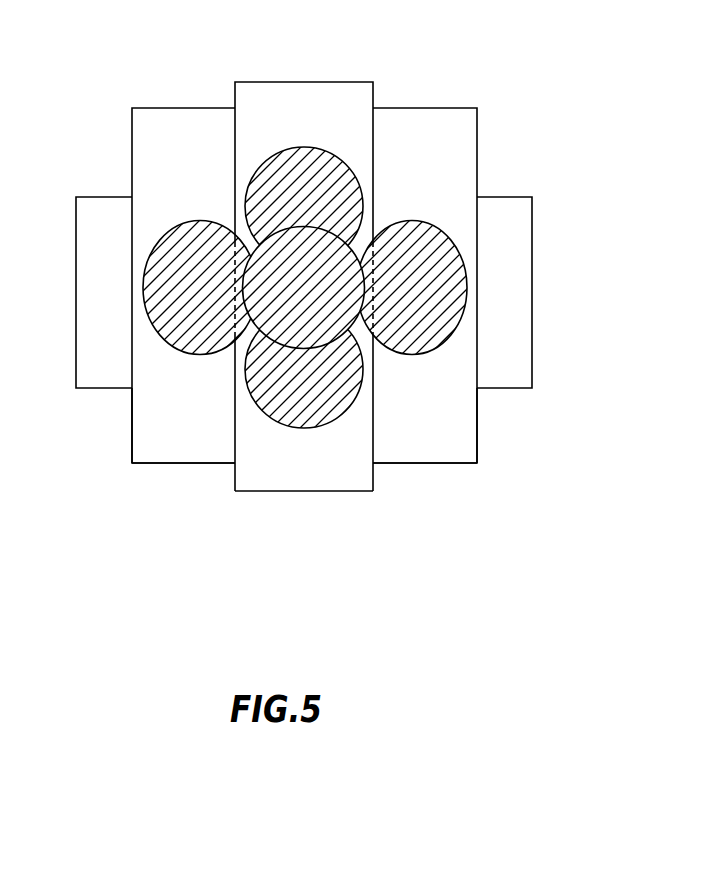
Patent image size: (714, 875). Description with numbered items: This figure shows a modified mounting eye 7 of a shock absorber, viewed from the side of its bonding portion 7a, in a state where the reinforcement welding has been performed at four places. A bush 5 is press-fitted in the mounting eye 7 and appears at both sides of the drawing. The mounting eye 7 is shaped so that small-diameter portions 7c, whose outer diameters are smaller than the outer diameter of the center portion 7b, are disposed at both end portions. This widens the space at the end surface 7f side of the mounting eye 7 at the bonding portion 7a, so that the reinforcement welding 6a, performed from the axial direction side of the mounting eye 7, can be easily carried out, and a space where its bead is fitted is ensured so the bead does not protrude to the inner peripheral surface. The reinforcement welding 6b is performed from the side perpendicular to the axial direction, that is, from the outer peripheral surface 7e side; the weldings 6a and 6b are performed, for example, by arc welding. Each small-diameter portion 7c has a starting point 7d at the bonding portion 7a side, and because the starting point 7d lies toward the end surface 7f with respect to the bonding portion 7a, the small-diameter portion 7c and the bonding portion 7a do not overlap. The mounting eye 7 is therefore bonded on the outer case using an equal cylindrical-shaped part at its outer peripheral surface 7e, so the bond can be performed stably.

The bush 5 is at (532, 248).
The reinforcement welding 6a is at (178, 223).
The reinforcement welding 6b is at (301, 147).
The mounting eye 7 is at (477, 445).
The bonding portion 7a is at (350, 251).
The center portion 7b is at (337, 492).
The small-diameter portion 7c is at (168, 464).
The starting point 7d is at (234, 147).
The outer peripheral surface 7e is at (253, 491).
The end surface 7f is at (132, 453).